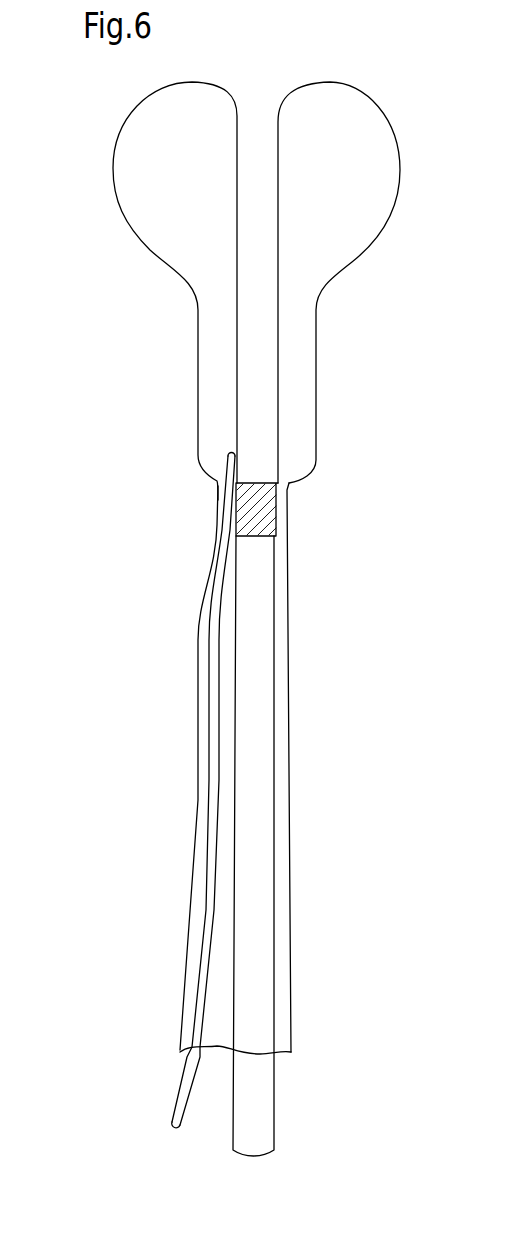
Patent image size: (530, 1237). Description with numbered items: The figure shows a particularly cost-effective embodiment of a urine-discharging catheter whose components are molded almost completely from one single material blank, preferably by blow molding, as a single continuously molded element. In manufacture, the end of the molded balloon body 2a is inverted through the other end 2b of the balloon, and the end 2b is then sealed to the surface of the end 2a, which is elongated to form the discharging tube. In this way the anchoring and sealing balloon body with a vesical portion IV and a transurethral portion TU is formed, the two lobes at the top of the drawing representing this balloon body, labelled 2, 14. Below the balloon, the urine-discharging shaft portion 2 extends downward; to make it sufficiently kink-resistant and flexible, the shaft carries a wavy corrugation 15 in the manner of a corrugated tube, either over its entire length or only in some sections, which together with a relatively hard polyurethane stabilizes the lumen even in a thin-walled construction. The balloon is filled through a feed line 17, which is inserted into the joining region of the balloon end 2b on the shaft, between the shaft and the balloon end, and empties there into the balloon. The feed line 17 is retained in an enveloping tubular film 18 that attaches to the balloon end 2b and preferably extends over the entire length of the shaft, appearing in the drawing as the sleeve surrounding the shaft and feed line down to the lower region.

The urine-discharging shaft portion 2 is at (215, 291).
The grip section 14 is at (257, 223).
The vesical portion IV is at (142, 172).
The transurethral portion TU is at (218, 405).
The feed line 17 is at (228, 463).
The balloon end 2b is at (268, 510).
The wavy corrugation 15 is at (263, 652).
The enveloping tubular film 18 is at (198, 833).
The molded balloon body end 2a is at (255, 1097).